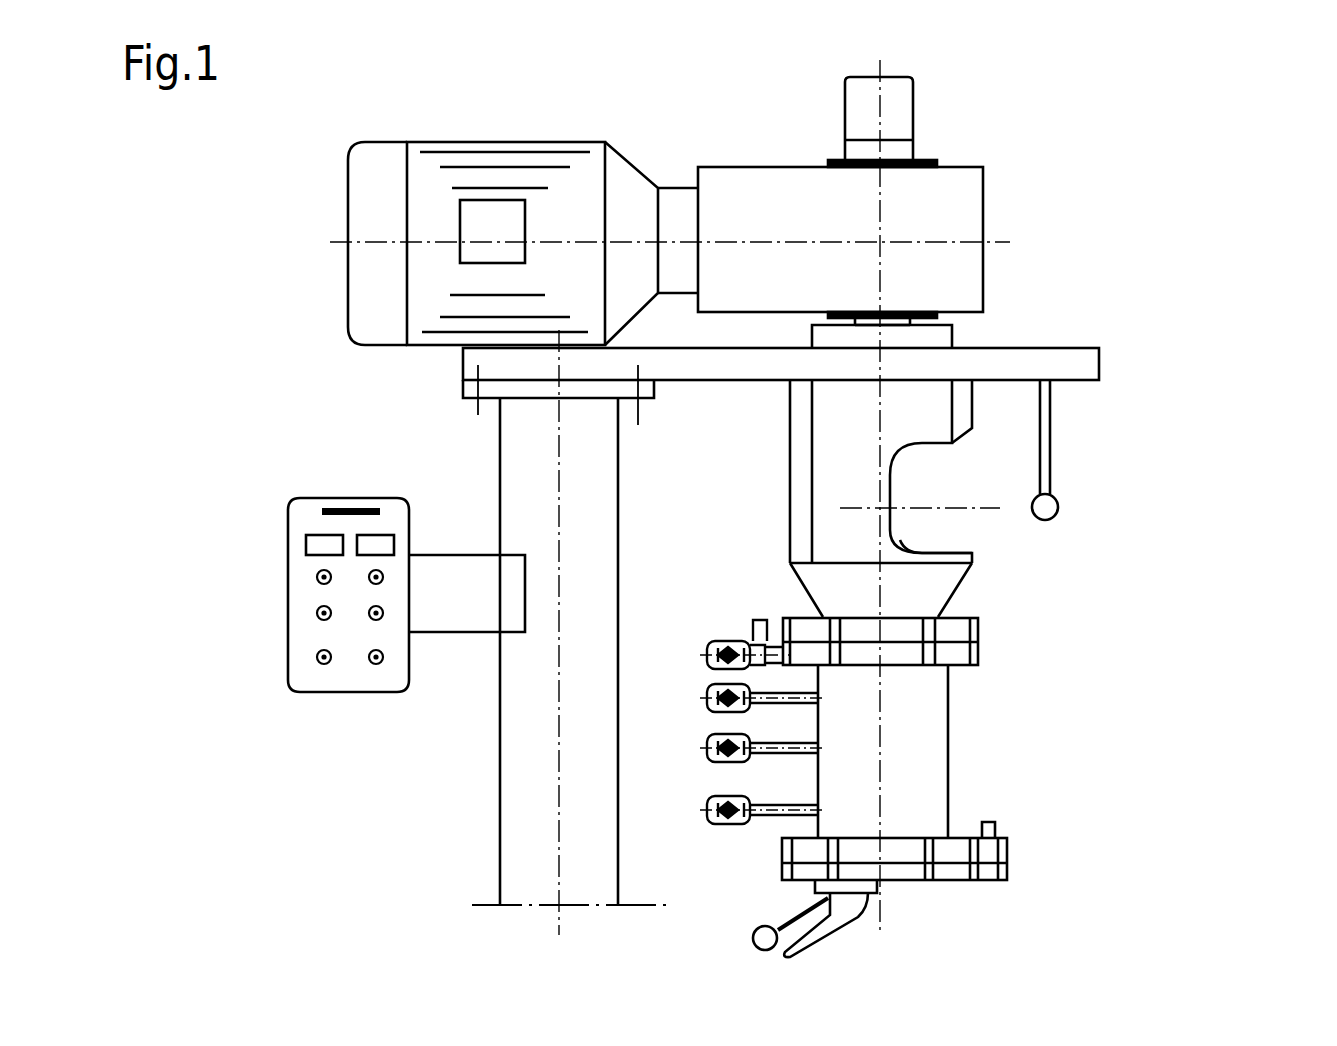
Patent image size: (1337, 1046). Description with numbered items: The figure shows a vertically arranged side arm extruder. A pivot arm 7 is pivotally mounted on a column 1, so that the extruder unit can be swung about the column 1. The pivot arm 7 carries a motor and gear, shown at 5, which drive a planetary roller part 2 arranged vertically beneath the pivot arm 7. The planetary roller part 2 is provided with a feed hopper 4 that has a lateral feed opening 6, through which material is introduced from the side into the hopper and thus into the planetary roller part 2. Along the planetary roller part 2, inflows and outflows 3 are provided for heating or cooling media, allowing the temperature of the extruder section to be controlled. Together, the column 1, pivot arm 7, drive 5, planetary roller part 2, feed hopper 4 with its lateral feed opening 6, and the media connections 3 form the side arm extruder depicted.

The column 1 is at (525, 837).
The planetary roller part 2 is at (927, 729).
The inflows and outflows 3 is at (818, 752).
The feed hopper 4 is at (885, 482).
The gear unit 5 is at (932, 202).
The lateral feed opening 6 is at (940, 550).
The pivot arm 7 is at (1047, 362).